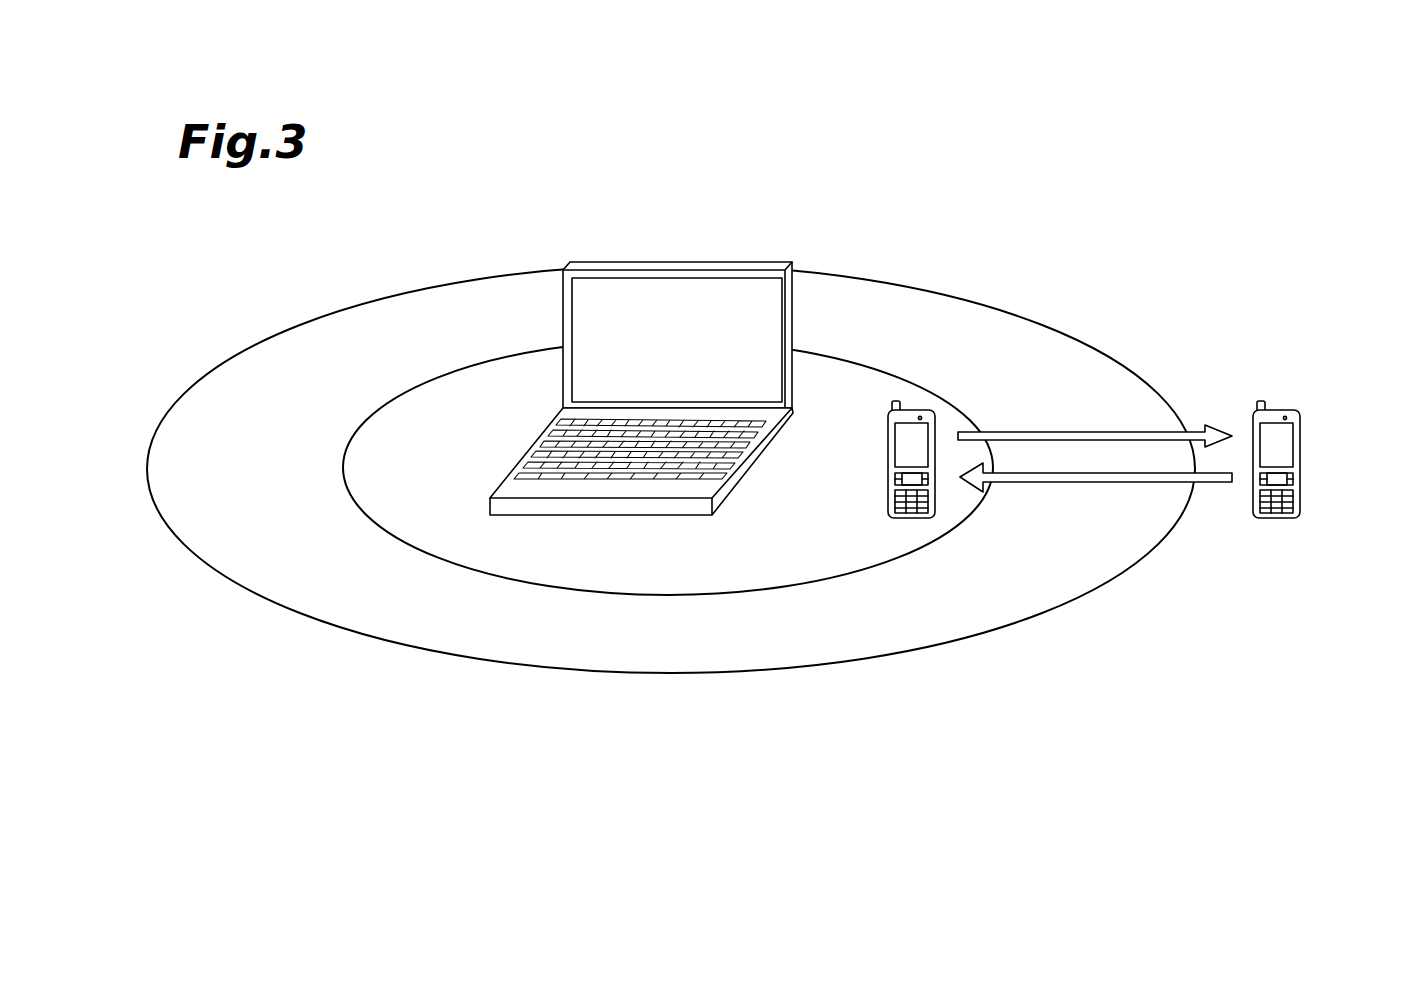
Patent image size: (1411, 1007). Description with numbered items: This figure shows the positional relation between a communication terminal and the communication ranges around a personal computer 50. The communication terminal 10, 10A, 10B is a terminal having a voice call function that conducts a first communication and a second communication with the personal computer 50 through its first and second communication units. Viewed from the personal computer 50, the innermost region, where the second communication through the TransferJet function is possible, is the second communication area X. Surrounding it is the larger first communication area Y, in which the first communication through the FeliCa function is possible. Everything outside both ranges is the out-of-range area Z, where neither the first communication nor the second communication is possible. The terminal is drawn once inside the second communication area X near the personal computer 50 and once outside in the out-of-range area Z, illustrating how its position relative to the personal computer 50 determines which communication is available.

The personal computer 50 is at (702, 262).
The communication terminal 10 is at (884, 418).
The communication terminal 10A is at (884, 418).
The communication terminal 10B is at (888, 432).
The second communication area X is at (870, 565).
The first communication area Y is at (826, 640).
The out-of-range area Z is at (775, 745).